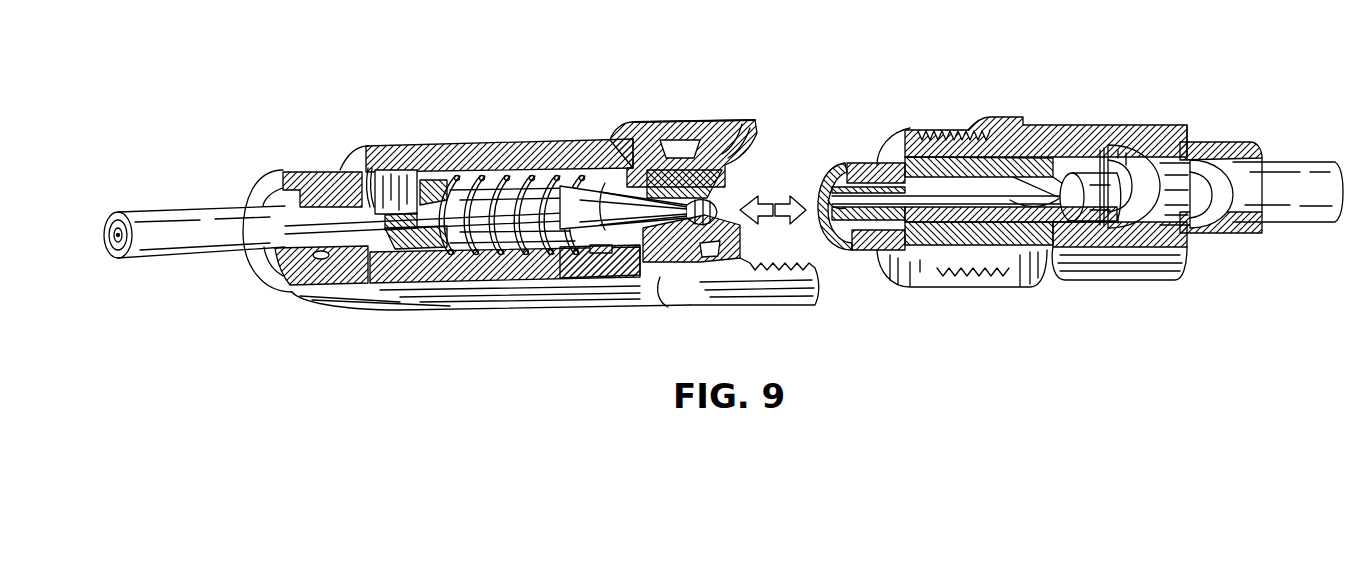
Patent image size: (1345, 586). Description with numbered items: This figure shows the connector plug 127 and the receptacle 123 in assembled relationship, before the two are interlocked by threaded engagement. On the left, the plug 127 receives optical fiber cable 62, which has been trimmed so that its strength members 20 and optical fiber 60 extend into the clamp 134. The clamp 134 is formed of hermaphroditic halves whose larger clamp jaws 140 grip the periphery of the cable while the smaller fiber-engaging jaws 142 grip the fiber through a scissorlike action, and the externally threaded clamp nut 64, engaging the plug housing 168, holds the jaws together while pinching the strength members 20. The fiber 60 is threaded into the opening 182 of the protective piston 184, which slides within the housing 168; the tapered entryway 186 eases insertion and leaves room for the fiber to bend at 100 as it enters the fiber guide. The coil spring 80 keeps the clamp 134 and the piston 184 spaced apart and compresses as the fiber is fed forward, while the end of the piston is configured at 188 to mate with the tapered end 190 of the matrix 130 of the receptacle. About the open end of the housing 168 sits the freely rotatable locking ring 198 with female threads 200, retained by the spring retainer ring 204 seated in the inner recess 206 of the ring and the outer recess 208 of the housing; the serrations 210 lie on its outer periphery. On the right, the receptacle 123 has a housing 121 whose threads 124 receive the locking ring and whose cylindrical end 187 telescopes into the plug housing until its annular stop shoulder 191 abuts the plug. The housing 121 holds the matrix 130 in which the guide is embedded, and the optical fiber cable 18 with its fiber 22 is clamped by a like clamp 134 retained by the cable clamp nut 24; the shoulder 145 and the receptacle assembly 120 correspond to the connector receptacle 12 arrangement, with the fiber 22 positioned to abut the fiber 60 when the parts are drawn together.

The connector receptacle 12 is at (528, 283).
The optical fiber cable 18 is at (1290, 177).
The strength members 20 is at (409, 155).
The optical fiber 22 is at (982, 200).
The cable clamp nut 24 is at (1232, 137).
The optical fiber 60 is at (492, 240).
The optical fiber cable 62 is at (183, 240).
The clamp nut 64 is at (288, 166).
The coil spring 80 is at (464, 208).
The bend 100 is at (1036, 235).
The jack connector 120 is at (870, 95).
The housing 121 is at (922, 118).
The receptacle 123 is at (1073, 70).
The threads 124 is at (951, 128).
The connector plug 127 is at (574, 76).
The matrix 130 is at (994, 160).
The clamp 134 is at (417, 168).
The clamp jaws 140 is at (1223, 205).
The fiber-engaging jaws 142 is at (1128, 195).
The shoulder 145 is at (1092, 120).
The plug housing 168 is at (586, 136).
The opening 182 is at (712, 220).
The protective piston 184 is at (604, 258).
The tapered entryway 186 is at (652, 218).
The cylindrical end 187 is at (850, 162).
The piston end configuration 188 is at (724, 188).
The tapered end 190 is at (832, 180).
The annular stop shoulder 191 is at (923, 253).
The locking ring 198 is at (670, 128).
The female threads 200 is at (724, 158).
The spring retainer ring 204 is at (703, 143).
The inner recess 206 is at (682, 147).
The outer recess 208 is at (710, 248).
The serrations 210 is at (753, 264).